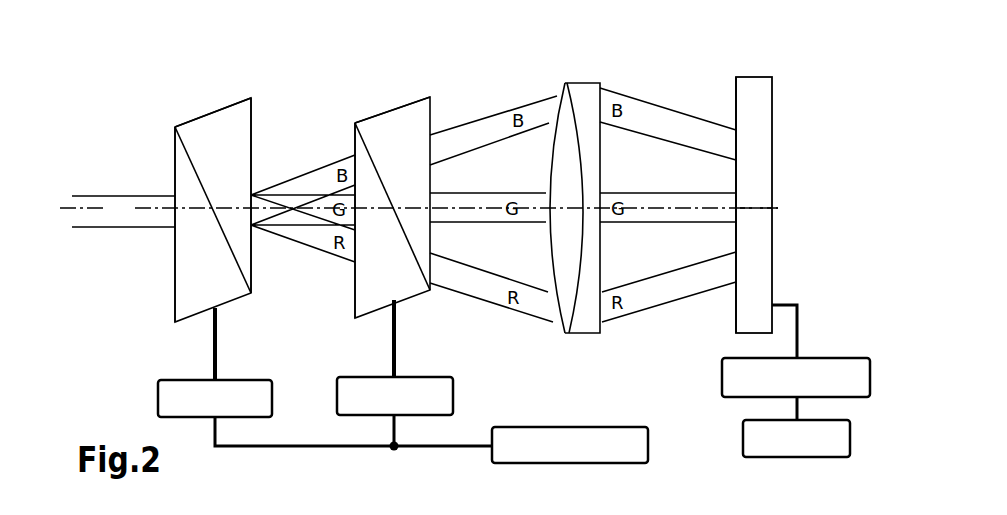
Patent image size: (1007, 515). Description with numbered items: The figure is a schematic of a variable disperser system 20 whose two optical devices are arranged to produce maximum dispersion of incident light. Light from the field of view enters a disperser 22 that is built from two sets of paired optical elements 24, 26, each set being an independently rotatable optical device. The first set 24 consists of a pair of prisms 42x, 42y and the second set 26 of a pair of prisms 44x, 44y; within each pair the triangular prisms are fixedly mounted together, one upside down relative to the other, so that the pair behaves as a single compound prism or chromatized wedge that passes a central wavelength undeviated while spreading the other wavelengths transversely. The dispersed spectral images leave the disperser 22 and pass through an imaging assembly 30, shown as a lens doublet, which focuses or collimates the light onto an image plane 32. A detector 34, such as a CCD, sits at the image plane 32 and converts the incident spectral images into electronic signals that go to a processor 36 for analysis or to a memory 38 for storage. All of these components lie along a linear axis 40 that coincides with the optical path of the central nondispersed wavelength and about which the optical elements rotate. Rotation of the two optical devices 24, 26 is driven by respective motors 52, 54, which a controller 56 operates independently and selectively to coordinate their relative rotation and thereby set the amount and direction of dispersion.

The variable disperser system 20 is at (118, 80).
The disperser 22 is at (213, 75).
The first set of paired optical elements 24 is at (266, 95).
The second set of paired optical elements 26 is at (410, 82).
The imaging assembly 30 is at (578, 60).
The image plane 32 is at (736, 103).
The detector 34 is at (757, 122).
The processor 36 is at (818, 358).
The memory 38 is at (778, 457).
The linear axis 40 is at (748, 203).
The prism 42x is at (187, 270).
The prism 42y is at (235, 158).
The prism 44x is at (370, 129).
The prism 44y is at (365, 275).
The motor 52 is at (235, 378).
The motor 54 is at (432, 375).
The controller 56 is at (528, 426).